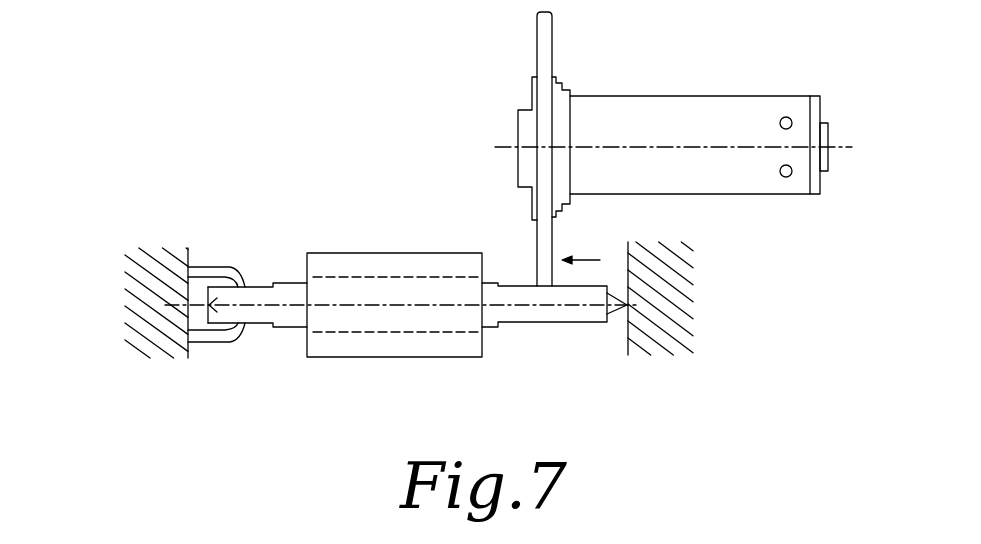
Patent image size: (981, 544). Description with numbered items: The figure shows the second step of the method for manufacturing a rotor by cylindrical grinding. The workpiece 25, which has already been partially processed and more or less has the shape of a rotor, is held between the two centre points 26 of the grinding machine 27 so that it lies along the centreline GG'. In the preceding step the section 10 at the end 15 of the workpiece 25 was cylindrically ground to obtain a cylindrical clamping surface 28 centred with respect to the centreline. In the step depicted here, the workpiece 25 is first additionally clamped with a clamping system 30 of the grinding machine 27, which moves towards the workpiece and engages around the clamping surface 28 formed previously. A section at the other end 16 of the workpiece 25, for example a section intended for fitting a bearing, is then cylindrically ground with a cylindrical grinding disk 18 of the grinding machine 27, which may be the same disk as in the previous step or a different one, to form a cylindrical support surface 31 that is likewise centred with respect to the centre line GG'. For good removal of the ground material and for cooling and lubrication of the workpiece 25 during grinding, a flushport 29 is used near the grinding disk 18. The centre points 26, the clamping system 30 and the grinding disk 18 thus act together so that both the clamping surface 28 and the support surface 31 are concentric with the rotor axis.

The section 10 is at (262, 384).
The end 15 is at (86, 302).
The other end 16 is at (770, 307).
The cylindrical grinding disk 18 is at (538, 29).
The workpiece 25 is at (412, 210).
The centre points 26 is at (197, 312).
The grinding machine 27 is at (690, 257).
The cylindrical clamping surface 28 is at (258, 323).
The flushport 29 is at (517, 268).
The clamping system 30 is at (216, 273).
The cylindrical support surface 31 is at (533, 323).